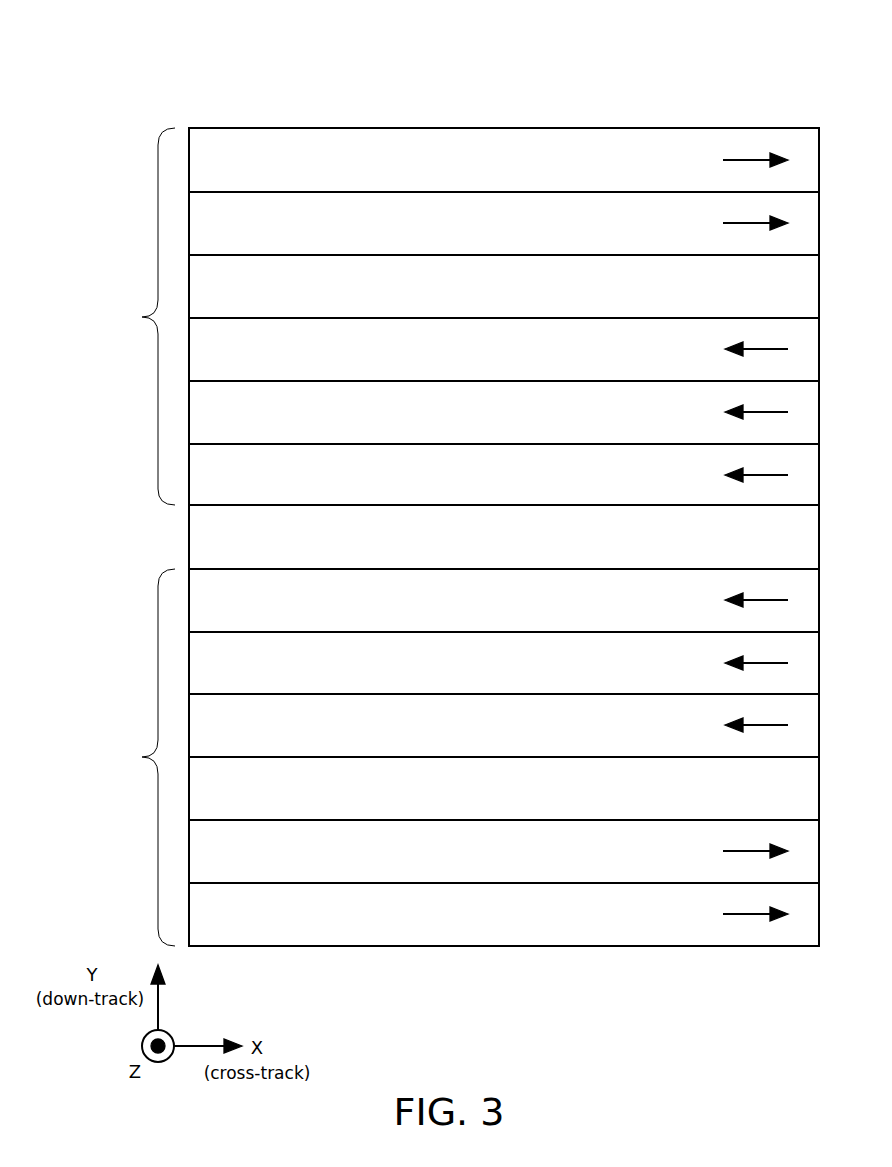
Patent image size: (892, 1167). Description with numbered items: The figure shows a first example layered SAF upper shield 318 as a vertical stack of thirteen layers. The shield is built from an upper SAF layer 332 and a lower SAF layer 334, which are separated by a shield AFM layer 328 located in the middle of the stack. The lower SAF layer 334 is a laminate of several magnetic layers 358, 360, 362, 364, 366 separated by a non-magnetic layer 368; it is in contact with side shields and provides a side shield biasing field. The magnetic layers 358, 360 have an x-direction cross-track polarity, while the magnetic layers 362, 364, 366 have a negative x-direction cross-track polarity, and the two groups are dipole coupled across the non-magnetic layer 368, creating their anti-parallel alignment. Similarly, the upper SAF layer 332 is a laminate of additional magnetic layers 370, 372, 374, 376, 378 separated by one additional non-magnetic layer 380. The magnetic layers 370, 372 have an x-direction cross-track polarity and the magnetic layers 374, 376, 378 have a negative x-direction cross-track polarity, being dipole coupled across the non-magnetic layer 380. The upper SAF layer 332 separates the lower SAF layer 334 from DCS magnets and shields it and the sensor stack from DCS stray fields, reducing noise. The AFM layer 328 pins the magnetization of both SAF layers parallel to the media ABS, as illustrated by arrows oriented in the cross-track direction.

The layered SAF upper shield 318 is at (168, 72).
The upper SAF layer 332 is at (95, 364).
The lower SAF layer 334 is at (95, 804).
The AFM layer 328 is at (487, 559).
The magnetic layer 370 is at (487, 182).
The magnetic layer 372 is at (487, 246).
The non-magnetic layer 380 is at (487, 309).
The magnetic layer 374 is at (487, 372).
The magnetic layer 376 is at (487, 435).
The magnetic layer 378 is at (487, 498).
The magnetic layer 366 is at (487, 623).
The magnetic layer 364 is at (487, 686).
The magnetic layer 362 is at (487, 748).
The non-magnetic layer 368 is at (487, 811).
The magnetic layer 360 is at (487, 874).
The magnetic layer 358 is at (487, 937).